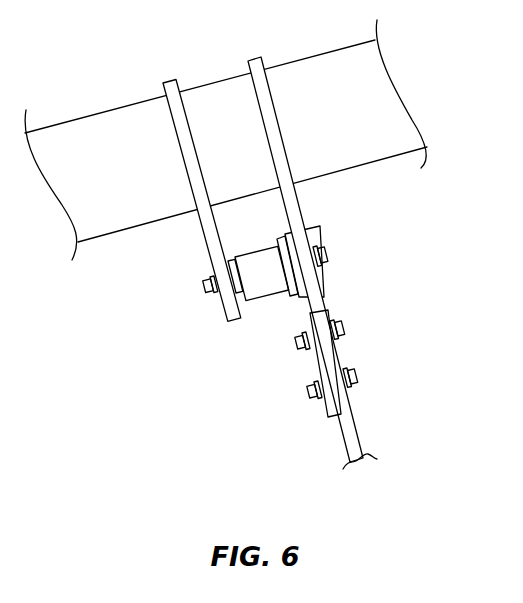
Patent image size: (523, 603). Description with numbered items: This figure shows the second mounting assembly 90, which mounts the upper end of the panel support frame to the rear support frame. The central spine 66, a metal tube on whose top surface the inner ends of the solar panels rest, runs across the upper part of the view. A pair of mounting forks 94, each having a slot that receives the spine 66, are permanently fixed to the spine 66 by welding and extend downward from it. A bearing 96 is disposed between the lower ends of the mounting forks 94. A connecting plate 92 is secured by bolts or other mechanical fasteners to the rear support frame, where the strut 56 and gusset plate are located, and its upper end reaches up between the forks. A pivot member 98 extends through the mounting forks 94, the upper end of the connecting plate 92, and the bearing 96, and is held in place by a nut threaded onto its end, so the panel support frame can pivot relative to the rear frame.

The central spine 66 is at (115, 128).
The mounting forks 94 is at (263, 60).
The pivot member 98 is at (328, 254).
The connecting plate 92 is at (306, 311).
The bearing 96 is at (262, 287).
The second mounting assembly 90 is at (173, 363).
The strut 56 is at (352, 438).